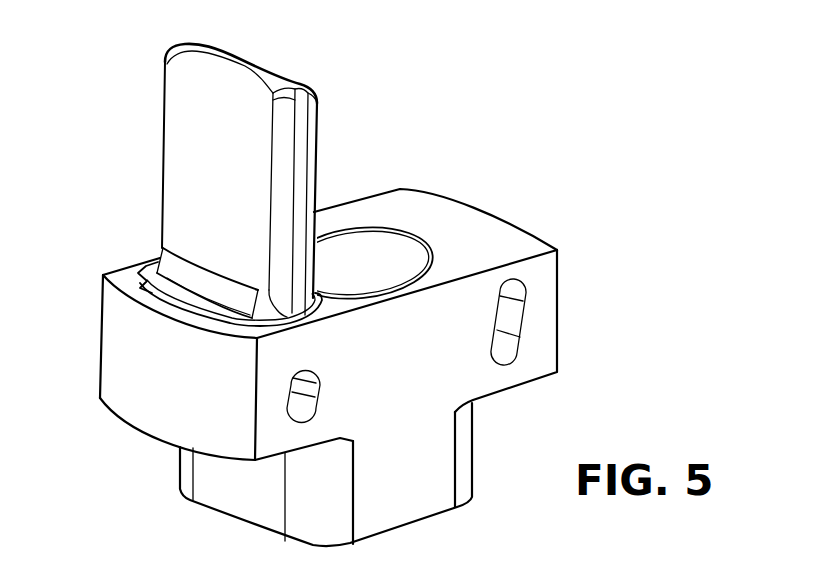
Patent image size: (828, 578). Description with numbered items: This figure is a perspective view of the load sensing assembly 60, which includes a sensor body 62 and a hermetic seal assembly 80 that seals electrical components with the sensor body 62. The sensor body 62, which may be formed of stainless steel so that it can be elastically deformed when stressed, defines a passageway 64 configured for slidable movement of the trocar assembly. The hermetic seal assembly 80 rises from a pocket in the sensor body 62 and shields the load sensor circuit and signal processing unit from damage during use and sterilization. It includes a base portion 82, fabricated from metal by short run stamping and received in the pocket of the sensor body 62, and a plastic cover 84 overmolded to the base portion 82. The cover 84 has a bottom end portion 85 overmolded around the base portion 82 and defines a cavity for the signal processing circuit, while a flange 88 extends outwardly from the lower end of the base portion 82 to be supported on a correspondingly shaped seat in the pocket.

The load sensing assembly 60 is at (480, 127).
The sensor body 62 is at (547, 292).
The passageway 64 is at (385, 247).
The hermetic seal assembly 80 is at (323, 108).
The base portion 82 is at (178, 275).
The cover 84 is at (170, 100).
The bottom end portion 85 is at (300, 285).
The flange 88 is at (137, 270).